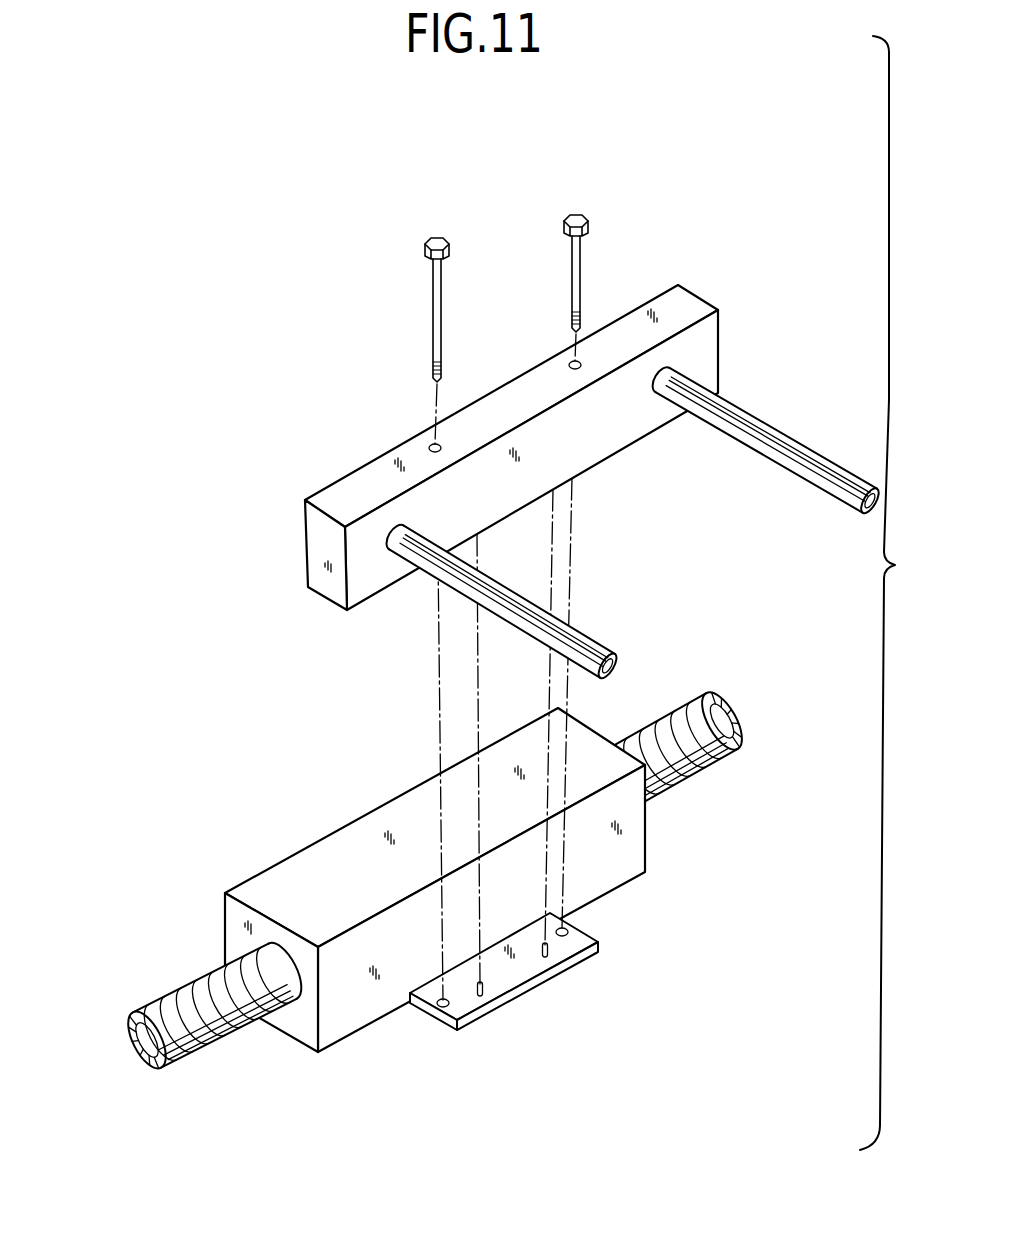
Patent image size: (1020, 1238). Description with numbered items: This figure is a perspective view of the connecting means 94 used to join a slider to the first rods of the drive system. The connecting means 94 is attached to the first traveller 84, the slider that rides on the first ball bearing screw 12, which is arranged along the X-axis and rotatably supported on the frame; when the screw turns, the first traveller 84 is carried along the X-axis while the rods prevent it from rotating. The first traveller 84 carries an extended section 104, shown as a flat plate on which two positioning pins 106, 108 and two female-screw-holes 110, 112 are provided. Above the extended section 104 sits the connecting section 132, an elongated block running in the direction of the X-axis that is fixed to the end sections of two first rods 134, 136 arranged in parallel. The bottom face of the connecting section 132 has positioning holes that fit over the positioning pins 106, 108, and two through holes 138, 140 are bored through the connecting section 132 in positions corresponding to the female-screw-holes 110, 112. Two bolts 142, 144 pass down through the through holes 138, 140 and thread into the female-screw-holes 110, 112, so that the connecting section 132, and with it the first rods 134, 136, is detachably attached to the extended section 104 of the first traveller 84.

The first ball bearing screw 12 is at (177, 990).
The first traveller 84 is at (270, 887).
The connecting means 94 is at (610, 917).
The extended section 104 is at (478, 1025).
The positioning pin 106 is at (549, 953).
The positioning pin 108 is at (484, 993).
The female-screw-hole 110 is at (568, 934).
The female-screw-hole 112 is at (440, 1008).
The connecting section 132 is at (327, 480).
The first rod 134 is at (818, 452).
The first rod 136 is at (593, 637).
The through hole 138 is at (580, 362).
The through hole 140 is at (432, 446).
The bolt 142 is at (586, 256).
The bolt 144 is at (450, 257).